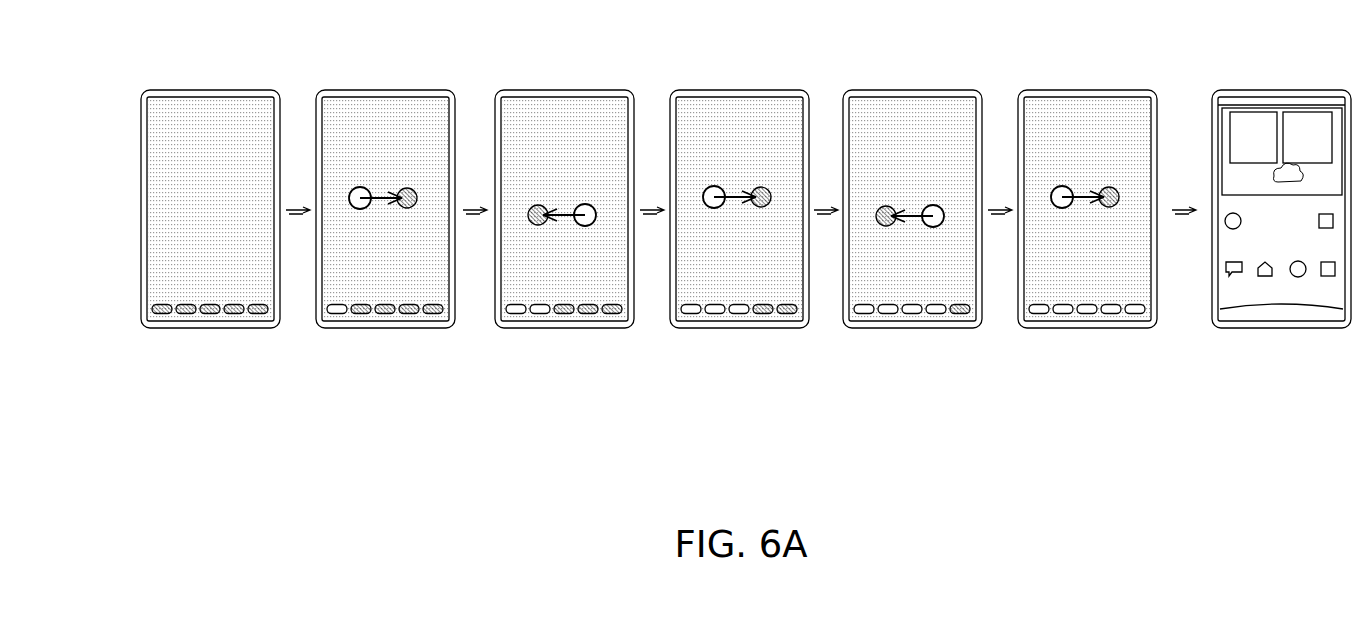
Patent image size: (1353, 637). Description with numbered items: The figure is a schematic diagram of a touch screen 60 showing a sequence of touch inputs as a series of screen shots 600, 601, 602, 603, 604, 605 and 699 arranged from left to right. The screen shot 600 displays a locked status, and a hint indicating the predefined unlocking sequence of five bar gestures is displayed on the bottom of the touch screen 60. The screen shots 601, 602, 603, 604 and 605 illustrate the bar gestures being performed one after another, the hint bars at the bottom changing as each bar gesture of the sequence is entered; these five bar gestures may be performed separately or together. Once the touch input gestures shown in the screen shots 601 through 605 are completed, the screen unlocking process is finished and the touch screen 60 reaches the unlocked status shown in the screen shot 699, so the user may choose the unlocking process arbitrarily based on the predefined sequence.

The touch screen 60 is at (210, 328).
The screen shot 600 is at (256, 53).
The screen shot 601 is at (433, 53).
The screen shot 602 is at (612, 53).
The screen shot 603 is at (787, 53).
The screen shot 604 is at (960, 53).
The screen shot 605 is at (1127, 50).
The screen shot 699 is at (1194, 80).